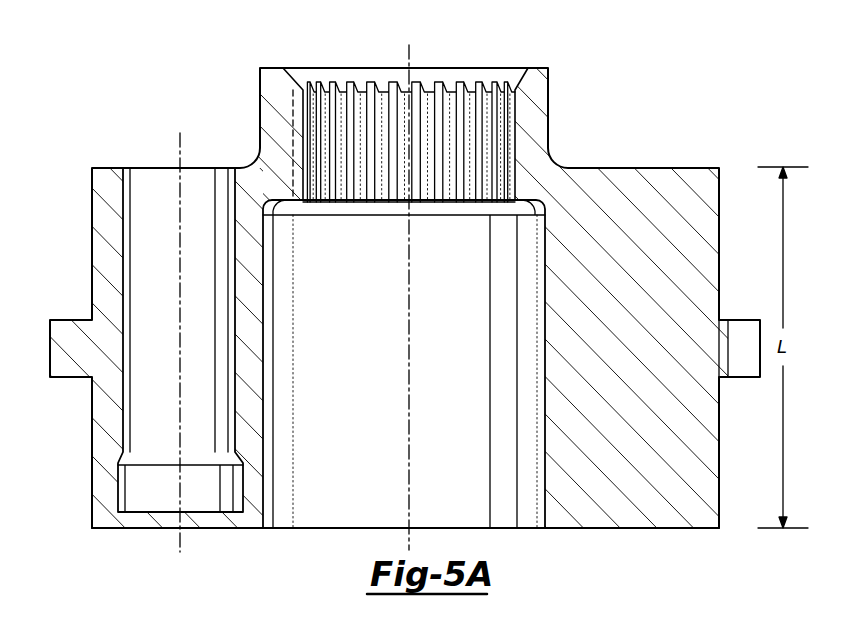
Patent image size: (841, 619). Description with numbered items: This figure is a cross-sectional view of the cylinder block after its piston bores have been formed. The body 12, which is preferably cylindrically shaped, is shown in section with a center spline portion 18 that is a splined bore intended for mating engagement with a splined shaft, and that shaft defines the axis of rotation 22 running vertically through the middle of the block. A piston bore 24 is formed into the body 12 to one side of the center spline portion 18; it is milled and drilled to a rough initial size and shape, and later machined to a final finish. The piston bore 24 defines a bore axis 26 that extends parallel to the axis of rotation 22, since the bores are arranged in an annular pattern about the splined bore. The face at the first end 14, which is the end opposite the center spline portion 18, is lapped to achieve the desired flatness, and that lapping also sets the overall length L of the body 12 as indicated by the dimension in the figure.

The body 12 is at (643, 198).
The first end 14 is at (602, 528).
The center spline portion 18 is at (293, 110).
The axis of rotation 22 is at (409, 437).
The piston bore 24 is at (162, 424).
The bore axis 26 is at (180, 142).